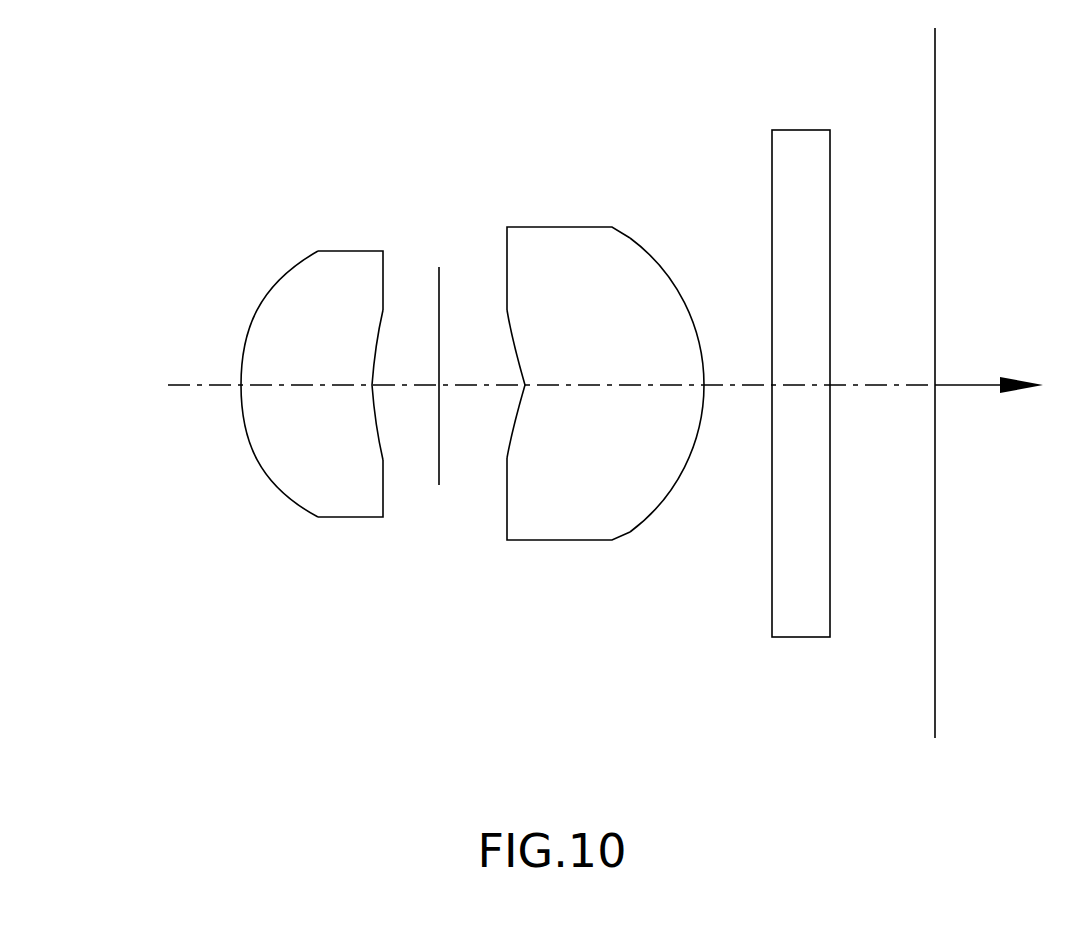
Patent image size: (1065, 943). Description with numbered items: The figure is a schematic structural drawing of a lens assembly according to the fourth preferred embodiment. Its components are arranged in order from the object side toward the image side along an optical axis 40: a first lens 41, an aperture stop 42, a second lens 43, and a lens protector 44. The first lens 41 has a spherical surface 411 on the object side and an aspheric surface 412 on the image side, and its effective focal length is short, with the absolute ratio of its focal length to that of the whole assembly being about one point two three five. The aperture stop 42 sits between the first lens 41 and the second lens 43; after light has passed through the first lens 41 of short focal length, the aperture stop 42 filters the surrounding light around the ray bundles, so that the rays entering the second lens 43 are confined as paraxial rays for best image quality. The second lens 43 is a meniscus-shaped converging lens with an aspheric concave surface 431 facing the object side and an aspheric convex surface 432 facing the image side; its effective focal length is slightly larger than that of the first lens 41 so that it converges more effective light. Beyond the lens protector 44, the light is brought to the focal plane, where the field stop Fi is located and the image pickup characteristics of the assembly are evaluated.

The optical axis 40 is at (212, 385).
The first lens 41 is at (305, 380).
The spherical surface 411 is at (270, 477).
The aspheric surface 412 is at (380, 333).
The aperture stop 42 is at (439, 288).
The second lens 43 is at (579, 408).
The aspheric concave surface 431 is at (505, 477).
The aspheric convex surface 432 is at (657, 262).
The lens protector 44 is at (812, 638).
The field stop Fi is at (935, 652).